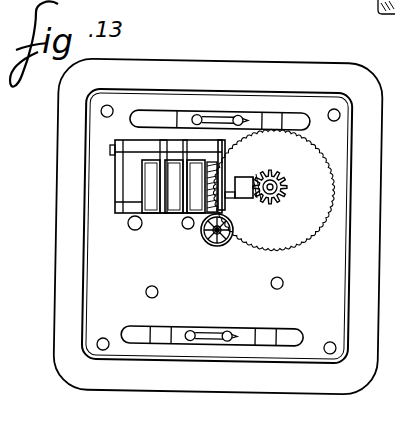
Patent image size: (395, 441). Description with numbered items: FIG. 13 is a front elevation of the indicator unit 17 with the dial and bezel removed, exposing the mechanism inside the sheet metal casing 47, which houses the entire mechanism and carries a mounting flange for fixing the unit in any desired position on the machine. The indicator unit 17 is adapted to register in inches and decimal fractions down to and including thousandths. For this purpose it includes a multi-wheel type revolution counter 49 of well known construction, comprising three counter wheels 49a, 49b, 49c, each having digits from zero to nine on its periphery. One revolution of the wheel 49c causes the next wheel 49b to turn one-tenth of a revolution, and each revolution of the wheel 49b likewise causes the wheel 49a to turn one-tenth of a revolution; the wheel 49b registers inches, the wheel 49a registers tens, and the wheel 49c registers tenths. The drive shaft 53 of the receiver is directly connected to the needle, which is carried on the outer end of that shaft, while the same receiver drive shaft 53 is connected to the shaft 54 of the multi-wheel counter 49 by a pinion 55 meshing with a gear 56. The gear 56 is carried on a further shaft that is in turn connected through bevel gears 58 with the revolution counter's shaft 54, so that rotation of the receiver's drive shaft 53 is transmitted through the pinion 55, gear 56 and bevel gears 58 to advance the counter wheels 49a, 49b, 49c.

The indicator unit 17 is at (80, 125).
The sheet metal casing 47 is at (283, 92).
The multi-wheel revolution counter 49 is at (108, 186).
The counter wheel 49a is at (142, 226).
The counter wheel 49b is at (165, 215).
The counter wheel 49c is at (188, 229).
The drive shaft 53 is at (211, 245).
The shaft 54 is at (234, 177).
The pinion 55 is at (213, 246).
The gear 56 is at (268, 250).
The bevel gears 58 is at (268, 174).